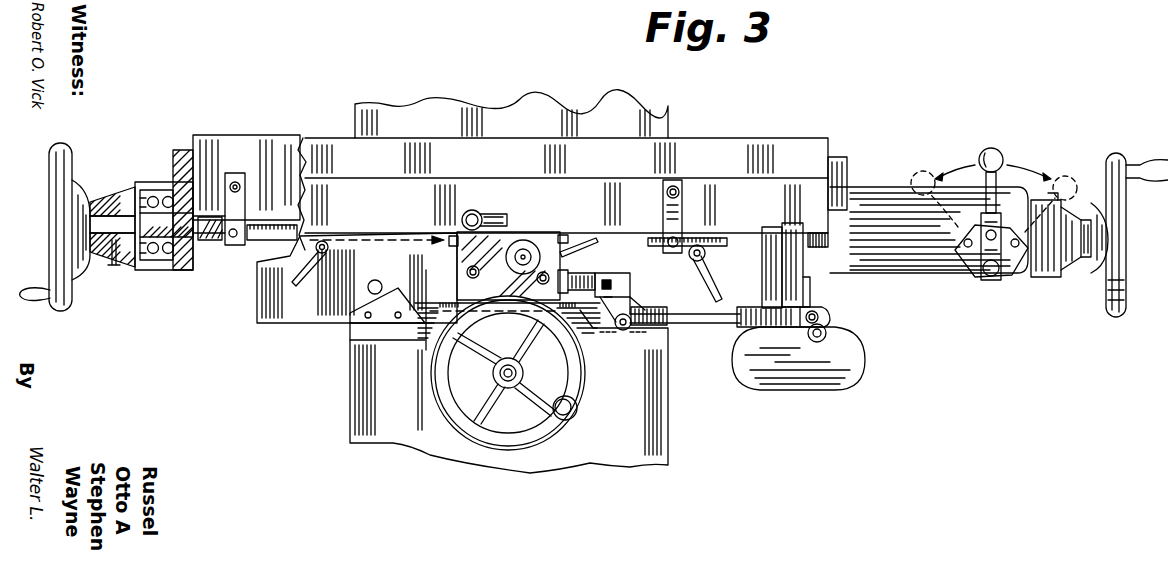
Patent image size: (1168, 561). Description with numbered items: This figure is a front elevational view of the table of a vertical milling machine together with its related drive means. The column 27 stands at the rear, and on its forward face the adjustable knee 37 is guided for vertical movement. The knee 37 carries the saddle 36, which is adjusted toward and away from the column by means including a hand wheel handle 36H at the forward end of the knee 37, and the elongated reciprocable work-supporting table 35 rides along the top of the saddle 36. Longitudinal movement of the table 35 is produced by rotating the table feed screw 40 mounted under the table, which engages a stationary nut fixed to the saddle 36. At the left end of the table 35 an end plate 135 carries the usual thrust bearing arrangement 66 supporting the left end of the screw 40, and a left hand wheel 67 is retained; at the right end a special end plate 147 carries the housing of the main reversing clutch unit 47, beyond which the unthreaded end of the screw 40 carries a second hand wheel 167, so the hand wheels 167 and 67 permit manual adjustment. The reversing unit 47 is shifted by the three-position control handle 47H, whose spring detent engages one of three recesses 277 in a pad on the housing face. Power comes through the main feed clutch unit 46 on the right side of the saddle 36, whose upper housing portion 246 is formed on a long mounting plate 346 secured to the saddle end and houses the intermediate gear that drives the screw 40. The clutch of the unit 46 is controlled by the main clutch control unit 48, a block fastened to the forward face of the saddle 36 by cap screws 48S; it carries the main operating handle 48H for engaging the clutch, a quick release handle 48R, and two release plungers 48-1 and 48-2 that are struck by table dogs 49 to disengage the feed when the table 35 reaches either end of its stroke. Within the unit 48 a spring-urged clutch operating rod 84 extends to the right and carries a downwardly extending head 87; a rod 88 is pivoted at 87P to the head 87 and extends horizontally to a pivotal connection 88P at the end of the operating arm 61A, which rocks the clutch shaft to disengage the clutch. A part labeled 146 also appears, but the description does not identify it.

The column 27 is at (478, 118).
The work-supporting table 35 is at (680, 155).
The saddle 36 is at (285, 320).
The handle 36H is at (512, 445).
The knee 37 is at (375, 422).
The table feed screw 40 is at (210, 242).
The main feed clutch unit 46 is at (832, 388).
The main reversing clutch unit 47 is at (917, 268).
The reversing control handle 47H is at (986, 150).
The main clutch control unit 48 is at (452, 258).
The main operating handle 48H is at (472, 212).
The release plunger 48-1 is at (562, 233).
The release plunger 48-2 is at (450, 238).
The quick release handle 48R is at (596, 238).
The cap screws 48S is at (467, 273).
The table dogs 49 is at (272, 225).
The operating arm 61A is at (830, 333).
The thrust bearing arrangement 66 is at (168, 182).
The left hand wheel 67 is at (72, 306).
The clutch operating rod 84 is at (582, 273).
The head 87 is at (630, 293).
The pivot 87P is at (628, 330).
The rod 88 is at (700, 328).
The pivotal connection 88P is at (820, 312).
The end plate 135 is at (190, 150).
The pad surface 146 is at (770, 388).
The special end plate 147 is at (840, 160).
The hand wheel 167 is at (1108, 300).
The upper housing portion 246 is at (793, 255).
The recesses 277 is at (958, 228).
The mounting plate 346 is at (775, 292).